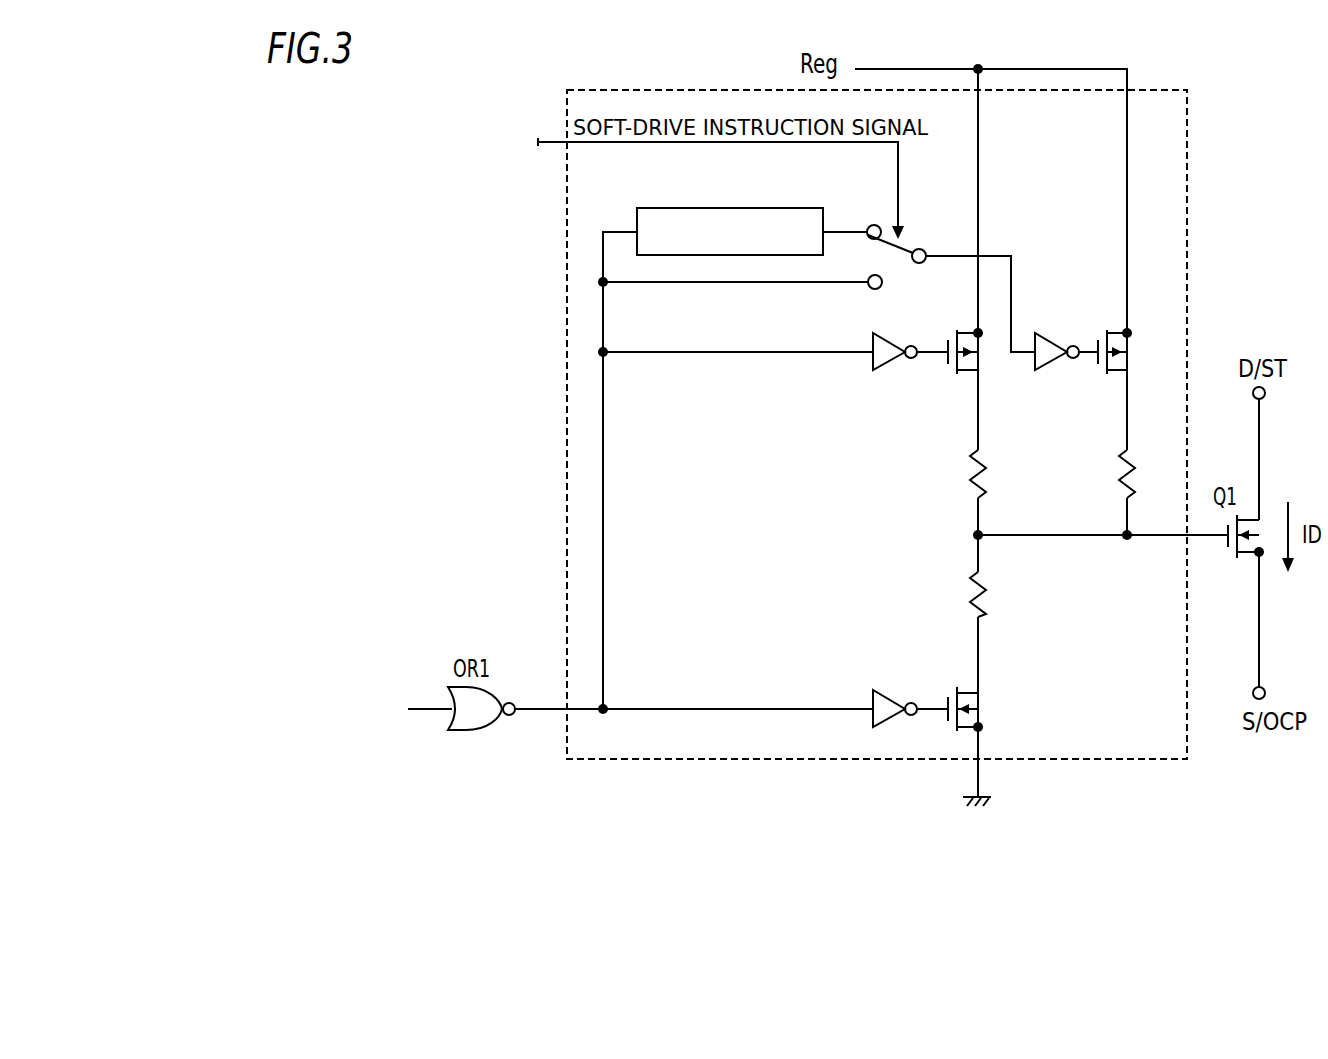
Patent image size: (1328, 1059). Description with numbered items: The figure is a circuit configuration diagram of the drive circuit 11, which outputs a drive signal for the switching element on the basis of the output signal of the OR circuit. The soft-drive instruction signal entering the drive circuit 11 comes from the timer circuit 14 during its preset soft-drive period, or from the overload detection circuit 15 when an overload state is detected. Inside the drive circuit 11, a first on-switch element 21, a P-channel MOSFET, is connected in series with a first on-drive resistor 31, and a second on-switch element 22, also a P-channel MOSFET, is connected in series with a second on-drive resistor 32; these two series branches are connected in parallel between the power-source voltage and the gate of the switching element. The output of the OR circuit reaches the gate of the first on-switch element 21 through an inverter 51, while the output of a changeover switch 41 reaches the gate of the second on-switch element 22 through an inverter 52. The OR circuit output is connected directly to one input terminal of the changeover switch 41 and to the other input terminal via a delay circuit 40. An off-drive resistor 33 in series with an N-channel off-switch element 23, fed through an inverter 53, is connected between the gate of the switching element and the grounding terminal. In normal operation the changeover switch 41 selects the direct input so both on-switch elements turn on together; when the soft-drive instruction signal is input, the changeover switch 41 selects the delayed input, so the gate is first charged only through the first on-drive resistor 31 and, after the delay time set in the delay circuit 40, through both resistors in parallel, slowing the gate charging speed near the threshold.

The drive circuit 11 is at (1188, 161).
The timer circuit 14 is at (605, 176).
The overload detection circuit 15 is at (353, 152).
The first on-switch element 21 is at (963, 330).
The second on-switch element 22 is at (1110, 330).
The off-switch element 23 is at (960, 683).
The first on-drive resistor 31 is at (983, 452).
The second on-drive resistor 32 is at (1132, 452).
The off-drive resistor 33 is at (983, 572).
The delay circuit 40 is at (748, 207).
The changeover switch 41 is at (908, 243).
The inverter 51 is at (880, 368).
The inverter 52 is at (1042, 368).
The inverter 53 is at (870, 697).